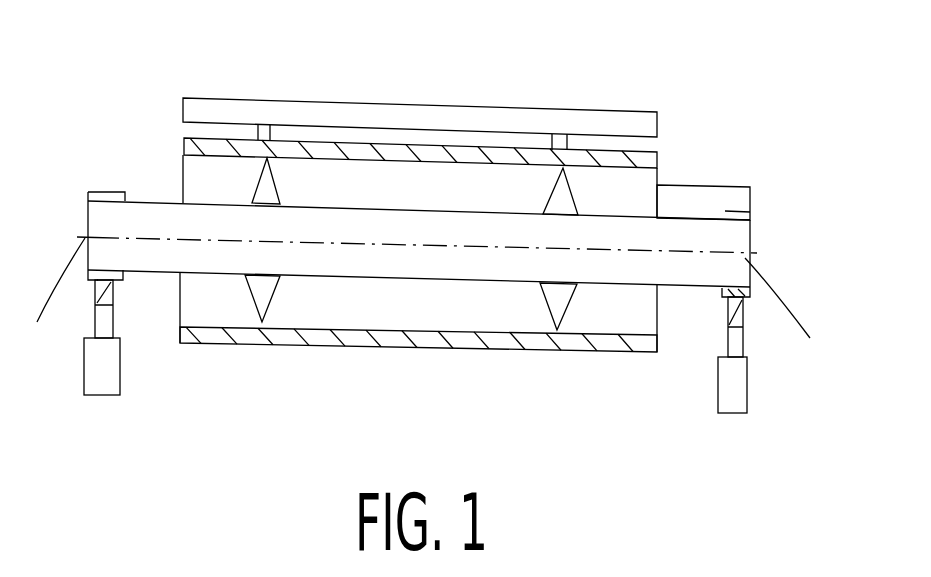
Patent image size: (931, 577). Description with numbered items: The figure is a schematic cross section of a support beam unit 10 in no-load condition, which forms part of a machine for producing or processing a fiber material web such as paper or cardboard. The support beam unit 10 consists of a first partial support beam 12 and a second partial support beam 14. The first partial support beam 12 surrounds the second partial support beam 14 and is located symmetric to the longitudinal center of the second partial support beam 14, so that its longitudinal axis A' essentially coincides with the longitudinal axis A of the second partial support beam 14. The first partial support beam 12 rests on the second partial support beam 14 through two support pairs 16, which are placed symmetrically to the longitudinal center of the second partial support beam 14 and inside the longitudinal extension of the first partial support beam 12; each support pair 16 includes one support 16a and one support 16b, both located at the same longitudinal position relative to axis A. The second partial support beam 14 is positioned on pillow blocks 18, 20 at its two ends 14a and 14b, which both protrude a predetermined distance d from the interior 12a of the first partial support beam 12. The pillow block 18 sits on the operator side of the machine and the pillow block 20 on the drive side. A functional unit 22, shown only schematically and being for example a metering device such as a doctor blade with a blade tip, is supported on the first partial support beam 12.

The support beam unit 10 is at (673, 81).
The first partial support beam 12 is at (183, 140).
The interior of first partial support beam 12a is at (210, 293).
The second partial support beam 14 is at (637, 265).
The end of second partial support beam 14a is at (103, 222).
The end of second partial support beam 14b is at (750, 235).
The support pair 16 is at (225, 183).
The support 16a is at (263, 190).
The support 16b is at (262, 293).
The pillow block 18 is at (103, 378).
The pillow block 20 is at (730, 410).
The functional unit 22 is at (657, 125).